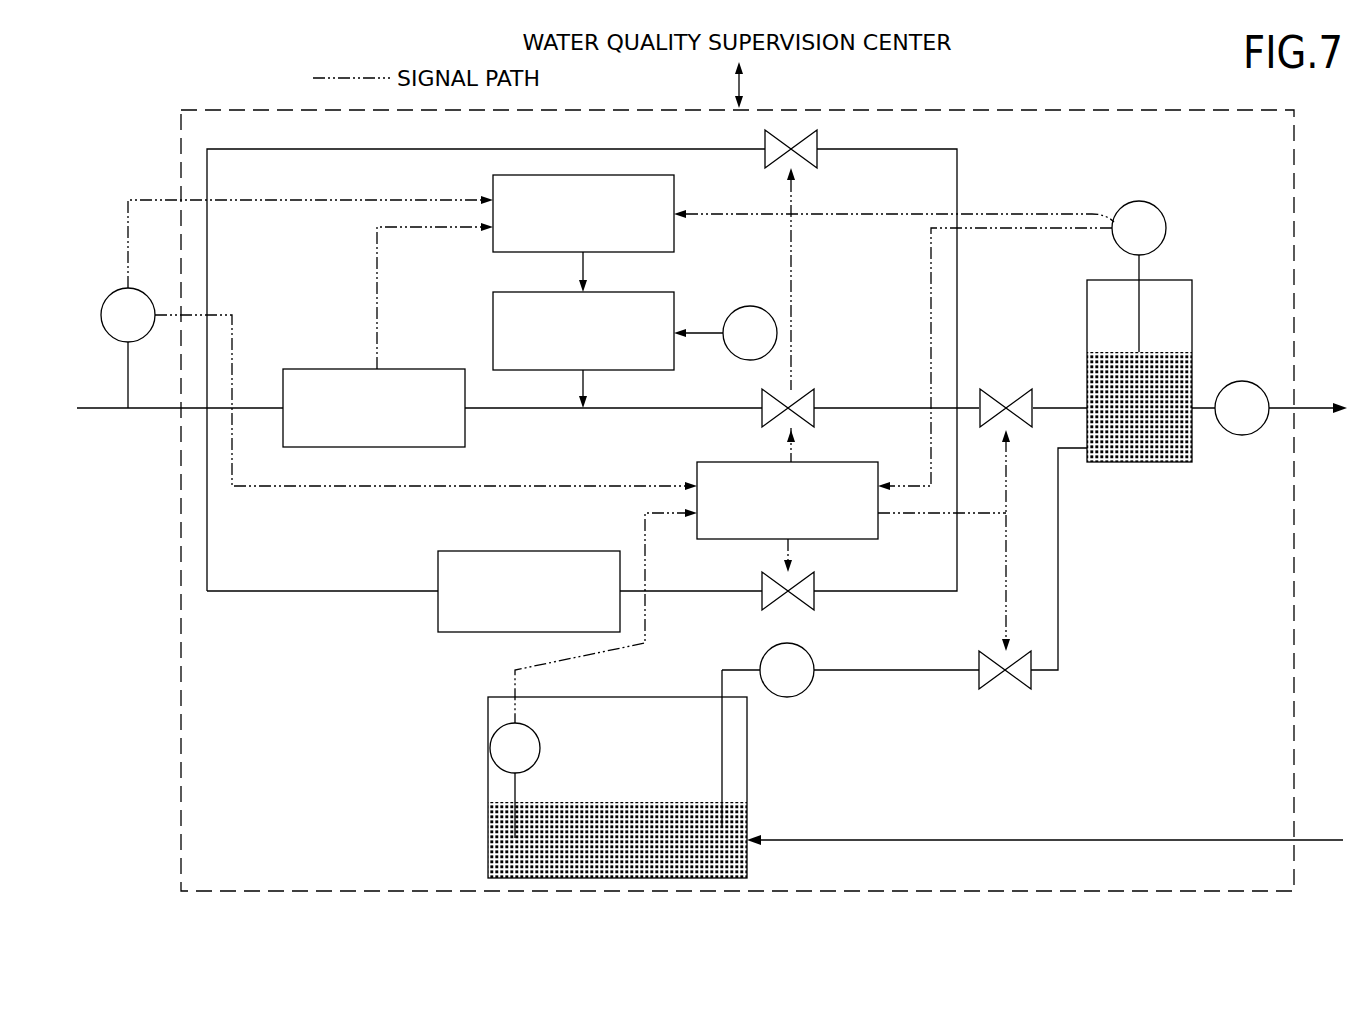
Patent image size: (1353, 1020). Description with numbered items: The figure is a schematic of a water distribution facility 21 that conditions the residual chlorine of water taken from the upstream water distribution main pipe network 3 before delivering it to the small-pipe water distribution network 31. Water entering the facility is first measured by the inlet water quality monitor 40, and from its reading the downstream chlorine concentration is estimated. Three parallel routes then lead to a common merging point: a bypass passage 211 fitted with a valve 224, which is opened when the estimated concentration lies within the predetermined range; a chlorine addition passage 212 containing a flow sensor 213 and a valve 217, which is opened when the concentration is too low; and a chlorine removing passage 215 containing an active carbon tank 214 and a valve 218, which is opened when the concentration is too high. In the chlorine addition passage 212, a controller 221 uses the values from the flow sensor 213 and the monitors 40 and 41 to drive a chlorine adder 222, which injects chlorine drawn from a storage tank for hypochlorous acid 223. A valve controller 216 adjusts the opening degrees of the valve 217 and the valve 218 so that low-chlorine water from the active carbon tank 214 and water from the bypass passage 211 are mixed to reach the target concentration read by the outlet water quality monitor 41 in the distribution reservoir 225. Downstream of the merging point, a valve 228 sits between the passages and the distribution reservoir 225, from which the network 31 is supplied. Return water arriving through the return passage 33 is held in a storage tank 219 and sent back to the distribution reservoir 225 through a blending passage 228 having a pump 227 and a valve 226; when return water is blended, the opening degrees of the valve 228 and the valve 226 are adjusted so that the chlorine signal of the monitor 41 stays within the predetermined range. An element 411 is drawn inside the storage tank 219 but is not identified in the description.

The water distribution facility 21 is at (202, 108).
The bypass passage 211 is at (258, 149).
The chlorine addition passage 212 is at (253, 405).
The flow sensor 213 is at (335, 367).
The active carbon tank 214 is at (527, 552).
The chlorine removing passage 215 is at (258, 590).
The valve controller 216 is at (694, 474).
The valve 217 is at (814, 400).
The valve 218 is at (819, 600).
The storage tank 219 is at (747, 757).
The controller 221 is at (492, 192).
The chlorine adder 222 is at (492, 332).
The storage tank for hypochlorous acid 223 is at (748, 305).
The valve 224 is at (817, 160).
The distribution reservoir 225 is at (1192, 296).
The valve 226 is at (985, 688).
The pump 227 is at (810, 685).
The valve 228 is at (1012, 398).
The water distribution main pipe network 3 is at (103, 410).
The small-pipe water distribution network 31 is at (1320, 406).
The return passage 33 is at (1320, 838).
The water quality monitor 40 is at (110, 300).
The water quality monitor 41 is at (1136, 201).
The water quality sensor 411 is at (541, 748).